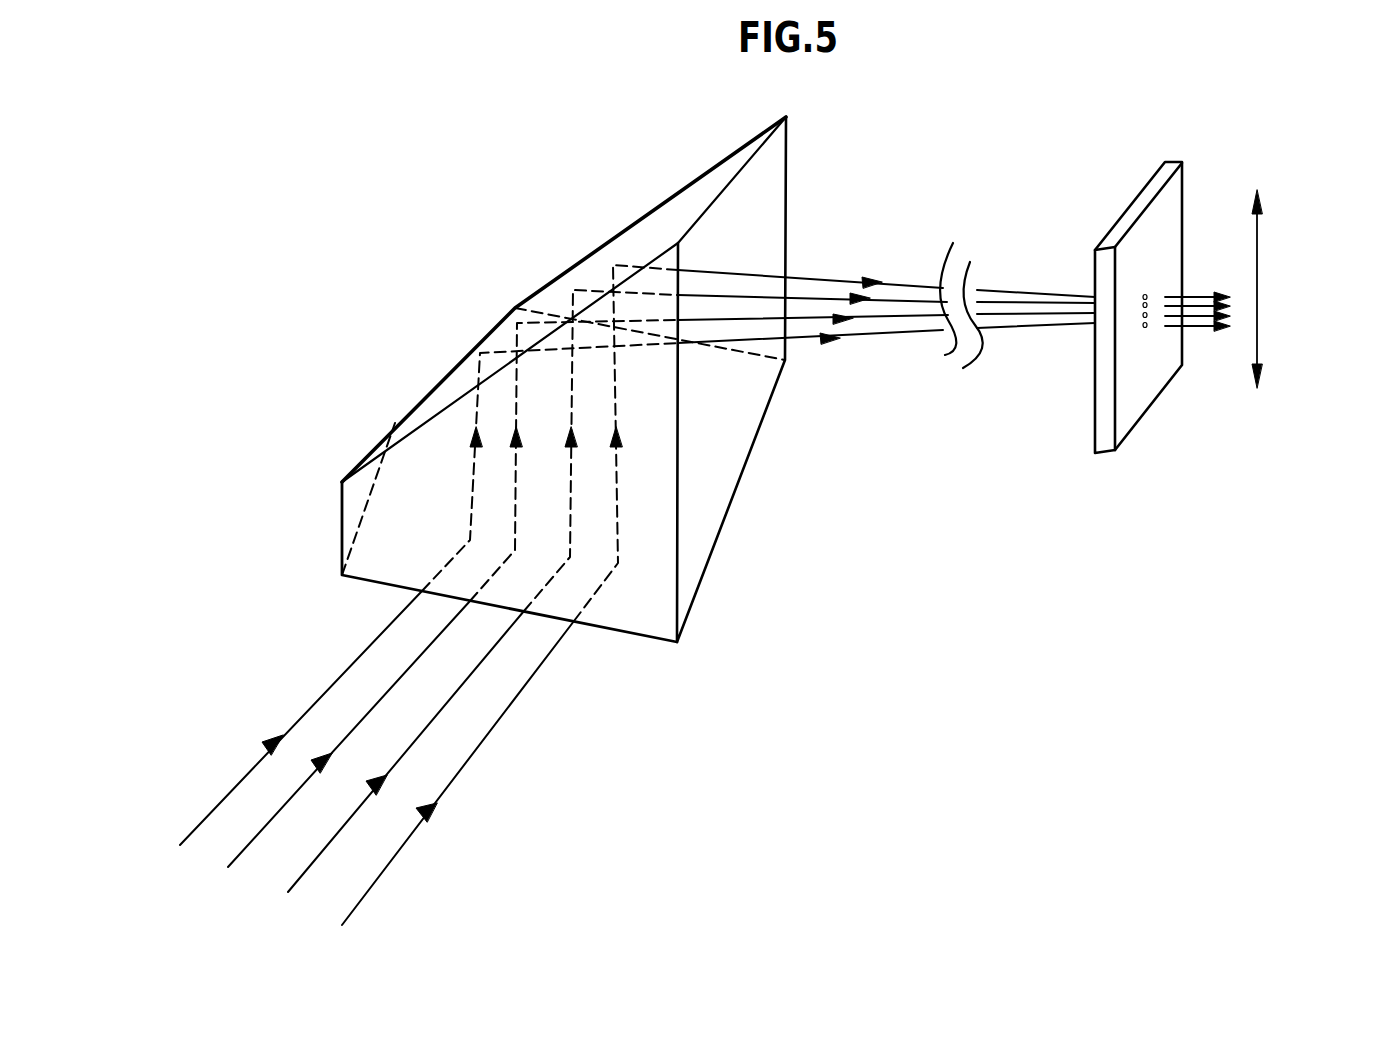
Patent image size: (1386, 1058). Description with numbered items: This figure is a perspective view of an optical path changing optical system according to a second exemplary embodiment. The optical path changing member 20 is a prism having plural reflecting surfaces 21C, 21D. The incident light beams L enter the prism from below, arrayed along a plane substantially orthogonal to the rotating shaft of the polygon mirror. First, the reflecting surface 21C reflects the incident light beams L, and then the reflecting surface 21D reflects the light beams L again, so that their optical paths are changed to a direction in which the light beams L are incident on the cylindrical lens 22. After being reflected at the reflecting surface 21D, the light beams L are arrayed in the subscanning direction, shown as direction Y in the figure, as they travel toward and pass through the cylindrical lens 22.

The optical path changing member 20 is at (615, 364).
The reflecting surface 21D is at (658, 232).
The reflecting surface 21C is at (707, 498).
The cylindrical lens 22 is at (1137, 207).
The light beams L is at (888, 336).
The Y direction Y is at (1257, 276).